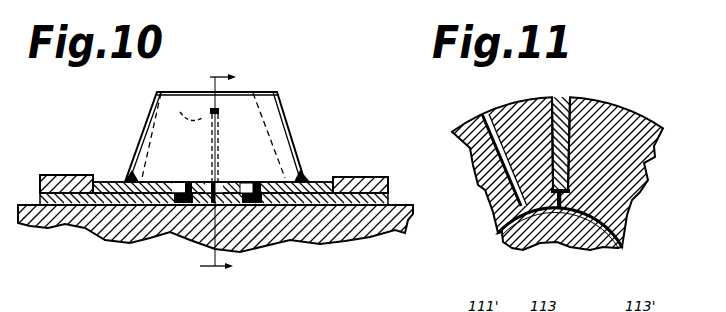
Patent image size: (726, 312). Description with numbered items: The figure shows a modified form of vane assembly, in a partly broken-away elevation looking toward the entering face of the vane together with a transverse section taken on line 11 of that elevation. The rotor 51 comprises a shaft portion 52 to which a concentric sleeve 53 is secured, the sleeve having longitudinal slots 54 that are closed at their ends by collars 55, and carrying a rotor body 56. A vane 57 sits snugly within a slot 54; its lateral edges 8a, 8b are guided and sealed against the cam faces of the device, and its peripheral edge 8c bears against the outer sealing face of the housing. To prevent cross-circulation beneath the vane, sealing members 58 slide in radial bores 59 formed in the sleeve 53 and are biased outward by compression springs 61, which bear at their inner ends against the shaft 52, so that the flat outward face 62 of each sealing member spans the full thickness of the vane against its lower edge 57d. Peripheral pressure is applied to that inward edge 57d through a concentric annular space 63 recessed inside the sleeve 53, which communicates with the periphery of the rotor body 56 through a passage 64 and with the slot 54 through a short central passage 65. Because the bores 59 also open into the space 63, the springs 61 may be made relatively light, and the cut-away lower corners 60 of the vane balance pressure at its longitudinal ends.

In FIG. 10, the lateral edge 8a is at (143, 118).
In FIG. 10, the lateral edge 8b is at (287, 120).
In FIG. 10, the peripheral edge 8c is at (237, 92).
In FIG. 10, the section line 11- 11 is at (203, 173).
In FIG. 10, the rotor 51 is at (331, 225).
In FIG. 11, the rotor 51 is at (512, 96).
In FIG. 10, the shaft portion 52 is at (394, 236).
In FIG. 11, the shaft portion 52 is at (597, 248).
In FIG. 10, the sleeve 53 is at (100, 181).
In FIG. 10, the longitudinal slot 54 is at (333, 178).
In FIG. 11, the longitudinal slot 54 is at (572, 107).
In FIG. 10, the collar 55 is at (52, 175).
In FIG. 10, the rotor body 56 is at (281, 100).
In FIG. 11, the rotor body 56 is at (610, 128).
In FIG. 10, the vane 57 is at (182, 128).
In FIG. 11, the vane 57 is at (562, 98).
In FIG. 10, the lower edge of vane 57d is at (279, 196).
In FIG. 10, the sealing member 58 is at (148, 195).
In FIG. 10, the radial bore 59 is at (251, 182).
In FIG. 10, the cut-away lower corner 60 is at (131, 176).
In FIG. 10, the compression spring 61 is at (257, 183).
In FIG. 10, the flat outward face 62 is at (246, 176).
In FIG. 10, the concentric space 63 is at (193, 196).
In FIG. 11, the concentric space 63 is at (623, 247).
In FIG. 10, the passage 64 is at (192, 112).
In FIG. 11, the passage 64 is at (481, 122).
In FIG. 10, the central passage 65 is at (211, 178).
In FIG. 11, the central passage 65 is at (560, 216).